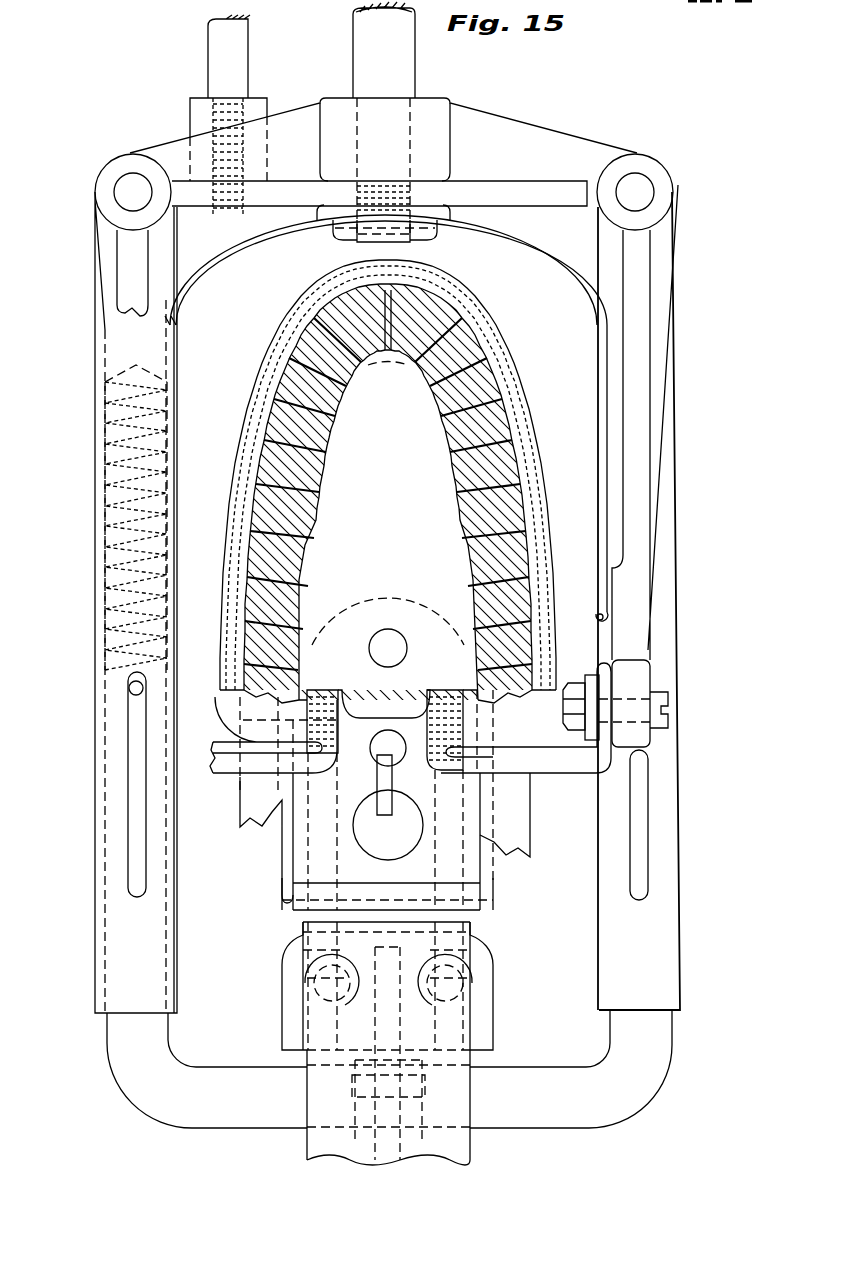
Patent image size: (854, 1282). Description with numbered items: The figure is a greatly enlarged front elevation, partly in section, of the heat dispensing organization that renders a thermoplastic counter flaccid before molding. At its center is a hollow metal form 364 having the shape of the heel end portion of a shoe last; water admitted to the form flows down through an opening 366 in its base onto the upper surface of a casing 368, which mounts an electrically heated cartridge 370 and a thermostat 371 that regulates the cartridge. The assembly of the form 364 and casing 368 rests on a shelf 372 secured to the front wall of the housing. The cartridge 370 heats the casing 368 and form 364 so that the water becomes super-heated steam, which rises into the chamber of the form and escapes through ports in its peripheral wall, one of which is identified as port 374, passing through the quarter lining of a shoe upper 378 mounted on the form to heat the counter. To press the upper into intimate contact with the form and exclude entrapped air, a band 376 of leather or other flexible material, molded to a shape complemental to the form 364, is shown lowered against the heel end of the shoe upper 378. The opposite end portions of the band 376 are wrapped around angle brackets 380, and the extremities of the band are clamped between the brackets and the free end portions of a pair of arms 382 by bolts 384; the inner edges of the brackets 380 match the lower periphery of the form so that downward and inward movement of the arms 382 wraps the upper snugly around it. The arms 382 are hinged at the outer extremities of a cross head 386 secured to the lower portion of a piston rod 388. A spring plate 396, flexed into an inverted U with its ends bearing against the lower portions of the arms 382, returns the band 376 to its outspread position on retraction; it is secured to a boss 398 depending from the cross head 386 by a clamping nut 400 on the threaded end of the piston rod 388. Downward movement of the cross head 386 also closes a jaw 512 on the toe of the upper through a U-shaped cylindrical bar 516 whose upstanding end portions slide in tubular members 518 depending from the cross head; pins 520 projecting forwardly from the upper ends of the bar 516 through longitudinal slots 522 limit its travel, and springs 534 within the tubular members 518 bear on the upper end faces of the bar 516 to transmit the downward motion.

The hollow metal form 364 is at (508, 424).
The opening 366 is at (352, 708).
The casing 368 is at (480, 870).
The electrically heated cartridge 370 is at (372, 843).
The thermostat 371 is at (372, 752).
The shelf 372 is at (480, 898).
The port 374 is at (395, 310).
The band 376 is at (540, 472).
The shoe upper 378 is at (527, 820).
The angle brackets 380 is at (222, 780).
The arms 382 is at (105, 272).
The bolts 384 is at (660, 692).
The cross head 386 is at (518, 128).
The piston rod 388 is at (415, 60).
The spring plate 396 is at (575, 280).
The boss 398 is at (450, 216).
The clamping nut 400 is at (335, 242).
The jaw 512 is at (470, 1020).
The U-shaped cylindrical bar 516 is at (548, 1125).
The tubular members 518 is at (95, 960).
The pins 520 is at (128, 688).
The longitudinal slots 522 is at (130, 828).
The springs 534 is at (105, 498).